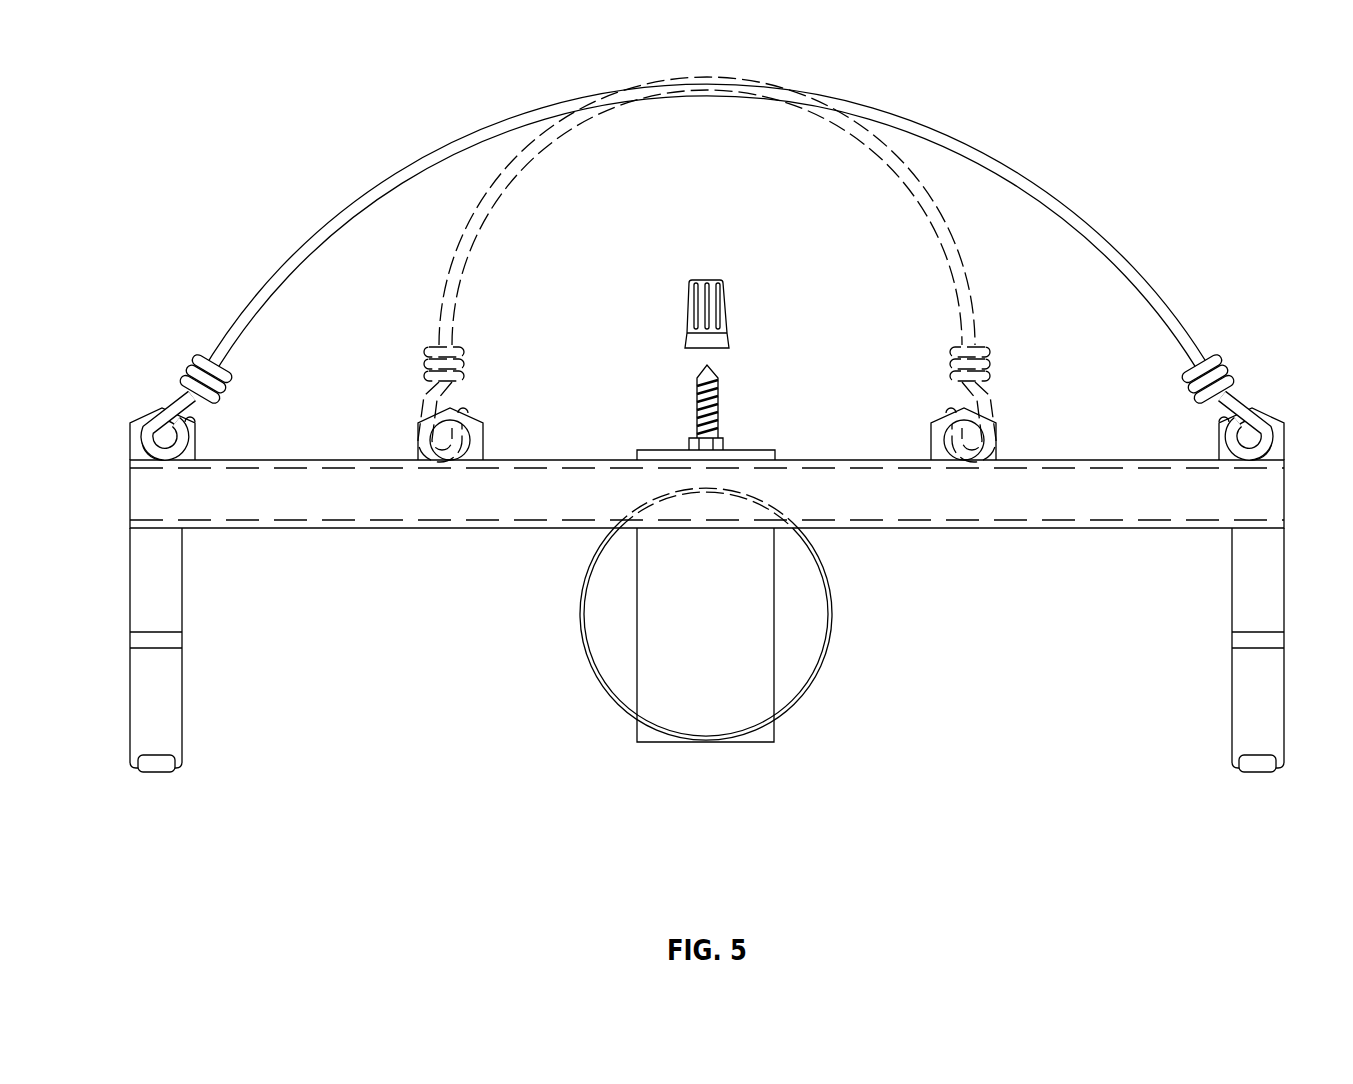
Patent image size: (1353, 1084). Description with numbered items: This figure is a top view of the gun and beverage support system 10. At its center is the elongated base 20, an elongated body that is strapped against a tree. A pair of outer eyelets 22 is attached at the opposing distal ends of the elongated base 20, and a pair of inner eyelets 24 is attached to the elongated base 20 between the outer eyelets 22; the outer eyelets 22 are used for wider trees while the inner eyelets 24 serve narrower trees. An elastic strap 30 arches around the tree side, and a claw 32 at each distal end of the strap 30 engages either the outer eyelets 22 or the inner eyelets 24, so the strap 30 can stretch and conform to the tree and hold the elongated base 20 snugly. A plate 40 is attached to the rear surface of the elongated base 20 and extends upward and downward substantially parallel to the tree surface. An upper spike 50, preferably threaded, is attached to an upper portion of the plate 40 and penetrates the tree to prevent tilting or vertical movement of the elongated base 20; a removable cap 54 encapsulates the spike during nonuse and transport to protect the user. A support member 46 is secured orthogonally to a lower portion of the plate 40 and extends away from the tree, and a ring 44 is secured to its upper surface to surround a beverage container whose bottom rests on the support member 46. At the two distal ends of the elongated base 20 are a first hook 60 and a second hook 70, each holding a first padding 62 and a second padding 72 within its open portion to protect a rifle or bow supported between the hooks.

The gun and beverage support system 10 is at (1257, 166).
The elongated base 20 is at (411, 514).
The outer eyelets 22 is at (192, 444).
The inner eyelets 24 is at (481, 442).
The strap 30 is at (707, 269).
The claw 32 is at (229, 362).
The plate 40 is at (746, 448).
The ring 44 is at (834, 617).
The support member 46 is at (776, 744).
The upper spike 50 is at (716, 387).
The cap 54 is at (723, 280).
The first hook 60 is at (1248, 570).
The first padding 62 is at (1248, 725).
The second hook 70 is at (167, 570).
The second padding 72 is at (167, 725).